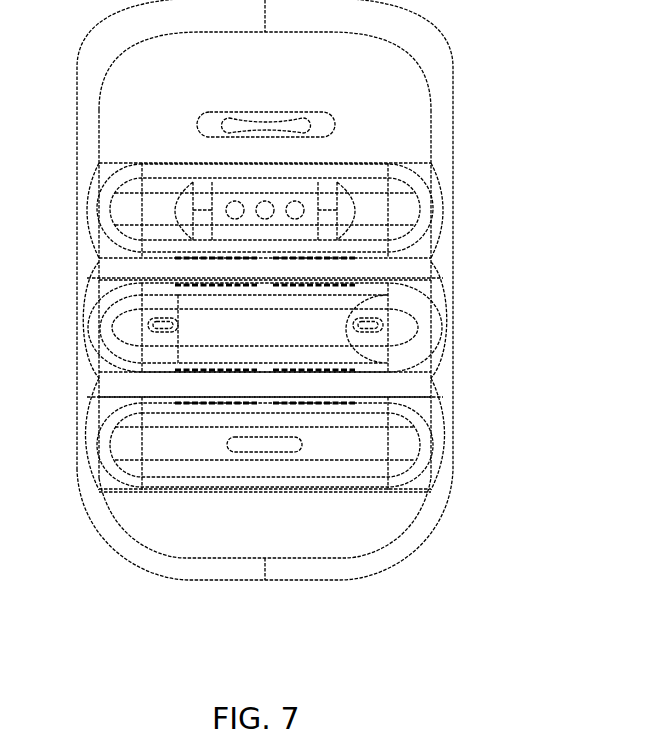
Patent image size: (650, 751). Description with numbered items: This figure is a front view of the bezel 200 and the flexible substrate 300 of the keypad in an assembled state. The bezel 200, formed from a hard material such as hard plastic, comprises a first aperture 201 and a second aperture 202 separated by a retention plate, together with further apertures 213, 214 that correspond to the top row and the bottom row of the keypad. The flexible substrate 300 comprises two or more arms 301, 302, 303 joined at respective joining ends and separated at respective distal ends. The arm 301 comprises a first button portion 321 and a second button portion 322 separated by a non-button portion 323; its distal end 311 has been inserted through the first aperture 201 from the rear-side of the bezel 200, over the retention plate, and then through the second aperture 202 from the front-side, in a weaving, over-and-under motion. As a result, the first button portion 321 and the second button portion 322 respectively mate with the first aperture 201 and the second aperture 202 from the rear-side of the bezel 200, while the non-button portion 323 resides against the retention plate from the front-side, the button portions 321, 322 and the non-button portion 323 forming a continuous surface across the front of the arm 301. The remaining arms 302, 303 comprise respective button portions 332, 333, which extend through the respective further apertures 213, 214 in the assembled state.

The bezel 200 is at (443, 72).
The first aperture 201 is at (104, 293).
The second aperture 202 is at (421, 277).
The further aperture 213 is at (420, 173).
The further aperture 214 is at (128, 500).
The flexible substrate 300 is at (137, 177).
The arm 301 is at (377, 350).
The arm 302 is at (405, 210).
The arm 303 is at (405, 445).
The distal end 311 is at (405, 322).
The first button portion 321 is at (150, 328).
The second button portion 322 is at (440, 345).
The non-button portion 323 is at (237, 322).
The button portion 332 is at (302, 185).
The button portion 333 is at (328, 443).